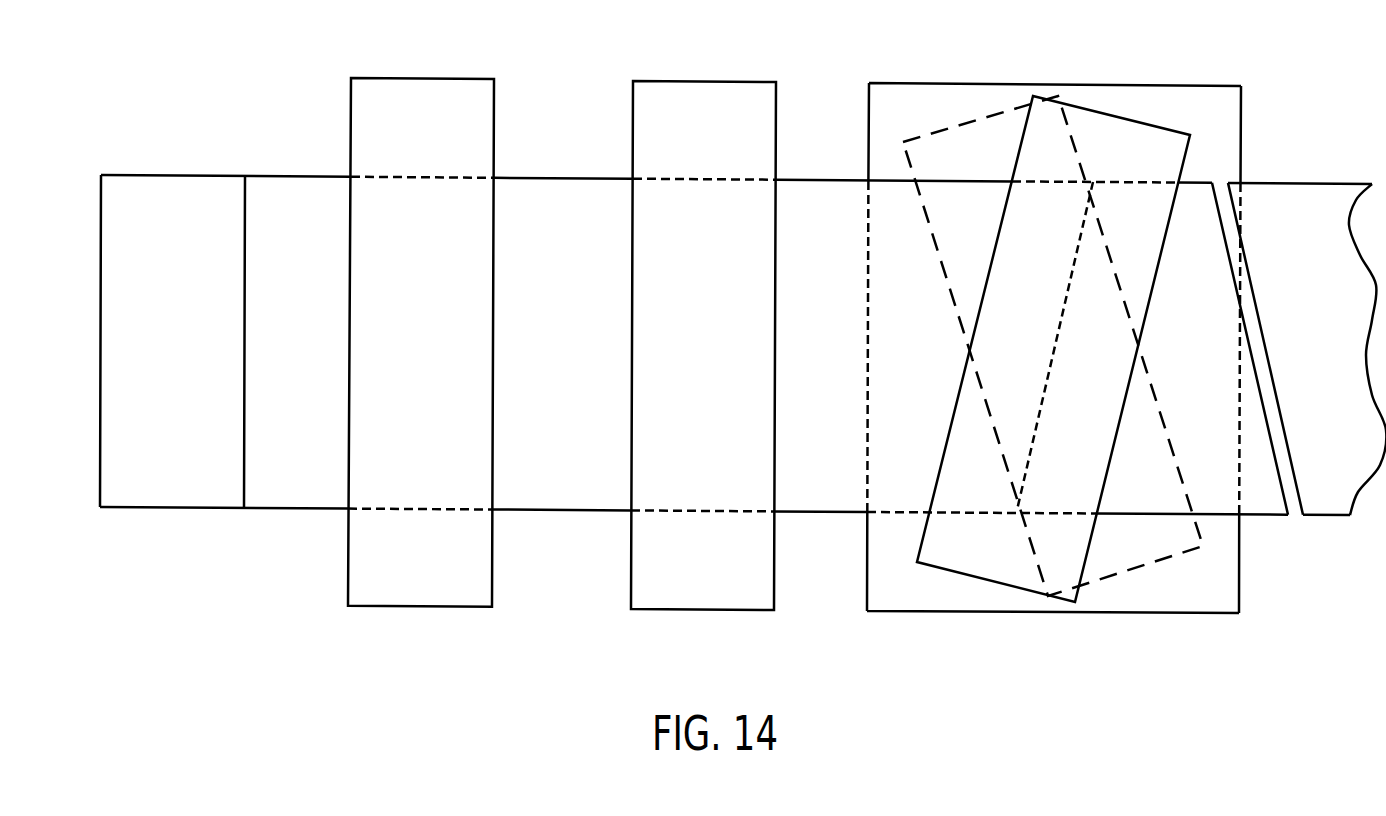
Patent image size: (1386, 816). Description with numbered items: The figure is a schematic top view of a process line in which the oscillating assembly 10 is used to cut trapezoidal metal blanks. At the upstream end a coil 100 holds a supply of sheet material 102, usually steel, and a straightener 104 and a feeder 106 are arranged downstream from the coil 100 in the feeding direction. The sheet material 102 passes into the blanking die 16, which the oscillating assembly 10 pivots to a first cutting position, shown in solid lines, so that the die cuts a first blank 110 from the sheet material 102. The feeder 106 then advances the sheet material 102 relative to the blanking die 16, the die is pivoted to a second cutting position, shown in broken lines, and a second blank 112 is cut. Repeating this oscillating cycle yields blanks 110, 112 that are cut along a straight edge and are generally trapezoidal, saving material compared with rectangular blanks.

The oscillating assembly 10 is at (1118, 635).
The blanking die 16 is at (1122, 133).
The coil 100 is at (184, 488).
The sheet material 102 is at (550, 198).
The straightener 104 is at (433, 590).
The feeder 106 is at (732, 590).
The first blank 110 is at (1323, 197).
The second blank 112 is at (1217, 506).